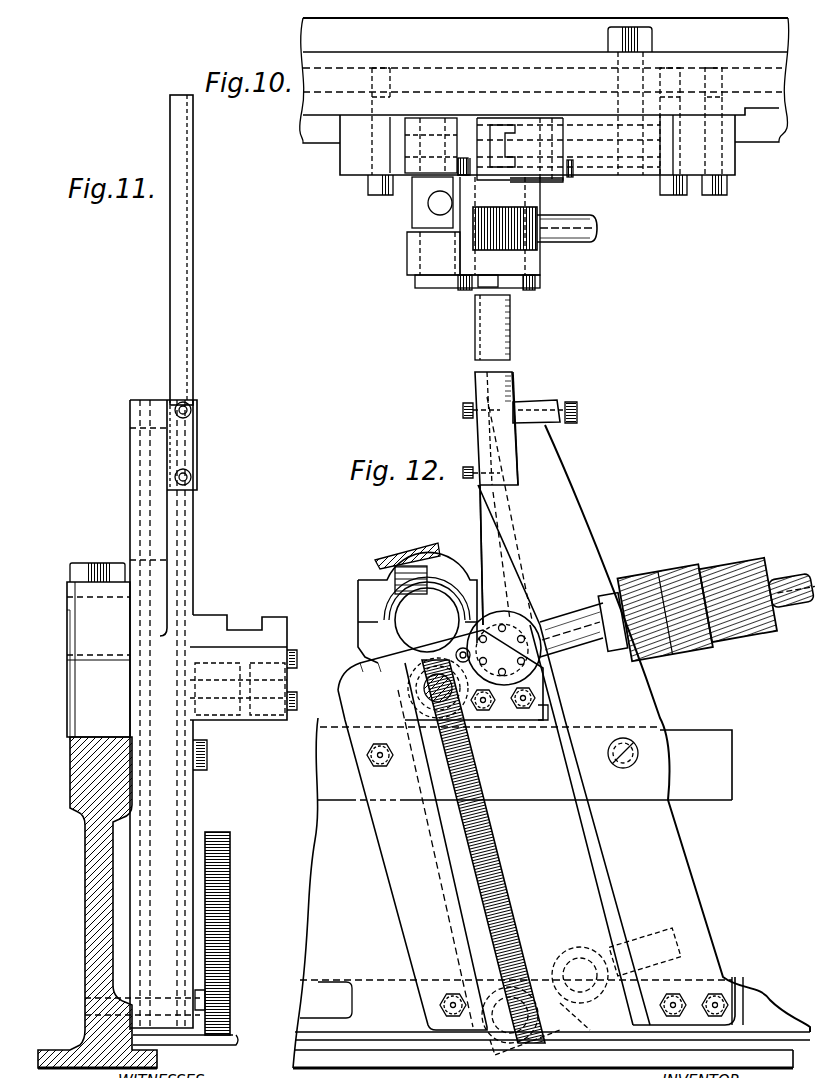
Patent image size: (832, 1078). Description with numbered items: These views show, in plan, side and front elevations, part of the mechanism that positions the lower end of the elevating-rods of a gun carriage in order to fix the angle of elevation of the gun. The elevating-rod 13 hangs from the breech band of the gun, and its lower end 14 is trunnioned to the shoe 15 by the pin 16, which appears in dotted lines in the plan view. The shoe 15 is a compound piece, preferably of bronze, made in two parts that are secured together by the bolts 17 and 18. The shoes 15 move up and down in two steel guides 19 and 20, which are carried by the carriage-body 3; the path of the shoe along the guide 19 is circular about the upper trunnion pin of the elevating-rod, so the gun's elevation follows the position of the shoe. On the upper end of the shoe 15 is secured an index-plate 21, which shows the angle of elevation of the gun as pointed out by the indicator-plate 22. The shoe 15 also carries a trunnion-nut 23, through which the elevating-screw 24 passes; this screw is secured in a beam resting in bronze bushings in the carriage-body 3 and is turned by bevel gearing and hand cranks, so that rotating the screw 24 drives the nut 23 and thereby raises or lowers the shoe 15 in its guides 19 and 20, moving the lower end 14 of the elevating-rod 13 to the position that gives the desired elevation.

In FIG. 11, the carriage-body 3 is at (85, 913).
In FIG. 12, the carriage-body 3 is at (551, 893).
In FIG. 12, the elevating-rod 13 is at (672, 580).
In FIG. 10, the lower end of the elevating-rod 14 is at (567, 242).
In FIG. 12, the lower end of the elevating-rod 14 is at (550, 630).
In FIG. 10, the shoe 15 is at (393, 280).
In FIG. 11, the shoe 15 is at (212, 615).
In FIG. 12, the shoe 15 is at (571, 935).
In FIG. 10, the pin 16 is at (526, 263).
In FIG. 12, the pin 16 is at (525, 656).
In FIG. 10, the bolt 17 is at (528, 290).
In FIG. 12, the bolt 17 is at (545, 713).
In FIG. 10, the bolt 18 is at (462, 290).
In FIG. 12, the bolt 18 is at (470, 580).
In FIG. 10, the steel guide 19 is at (667, 111).
In FIG. 11, the steel guide 19 is at (135, 528).
In FIG. 12, the steel guide 19 is at (670, 746).
In FIG. 10, the steel guide 20 is at (370, 131).
In FIG. 11, the steel guide 20 is at (172, 827).
In FIG. 12, the steel guide 20 is at (412, 846).
In FIG. 10, the index-plate 21 is at (492, 327).
In FIG. 11, the index-plate 21 is at (196, 341).
In FIG. 12, the indicator-plate 22 is at (545, 428).
In FIG. 10, the trunnion-nut 23 is at (412, 218).
In FIG. 11, the elevating-screw 24 is at (230, 917).
In FIG. 12, the elevating-screw 24 is at (508, 894).